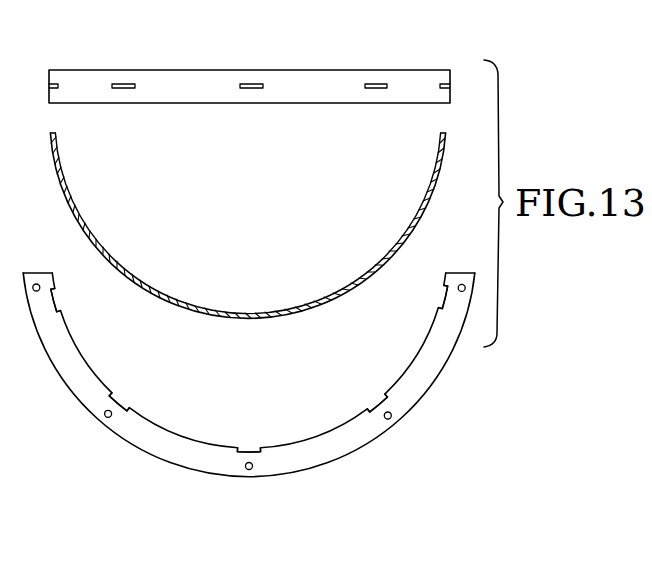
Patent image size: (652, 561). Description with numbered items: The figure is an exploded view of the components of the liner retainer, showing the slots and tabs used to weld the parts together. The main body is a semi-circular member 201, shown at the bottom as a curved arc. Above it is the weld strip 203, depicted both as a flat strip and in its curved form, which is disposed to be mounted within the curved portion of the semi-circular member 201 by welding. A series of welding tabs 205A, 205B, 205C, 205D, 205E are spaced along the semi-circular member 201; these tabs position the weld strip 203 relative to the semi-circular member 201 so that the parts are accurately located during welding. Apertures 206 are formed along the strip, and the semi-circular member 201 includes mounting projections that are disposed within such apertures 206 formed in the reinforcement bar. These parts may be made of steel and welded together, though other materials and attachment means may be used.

The semi-circular member 201 is at (180, 456).
The weld strip 203 is at (315, 103).
The welding tab 205A is at (441, 288).
The welding tab 205B is at (374, 398).
The welding tab 205C is at (250, 446).
The welding tab 205D is at (122, 397).
The welding tab 205E is at (58, 288).
The aperture 206 is at (378, 83).